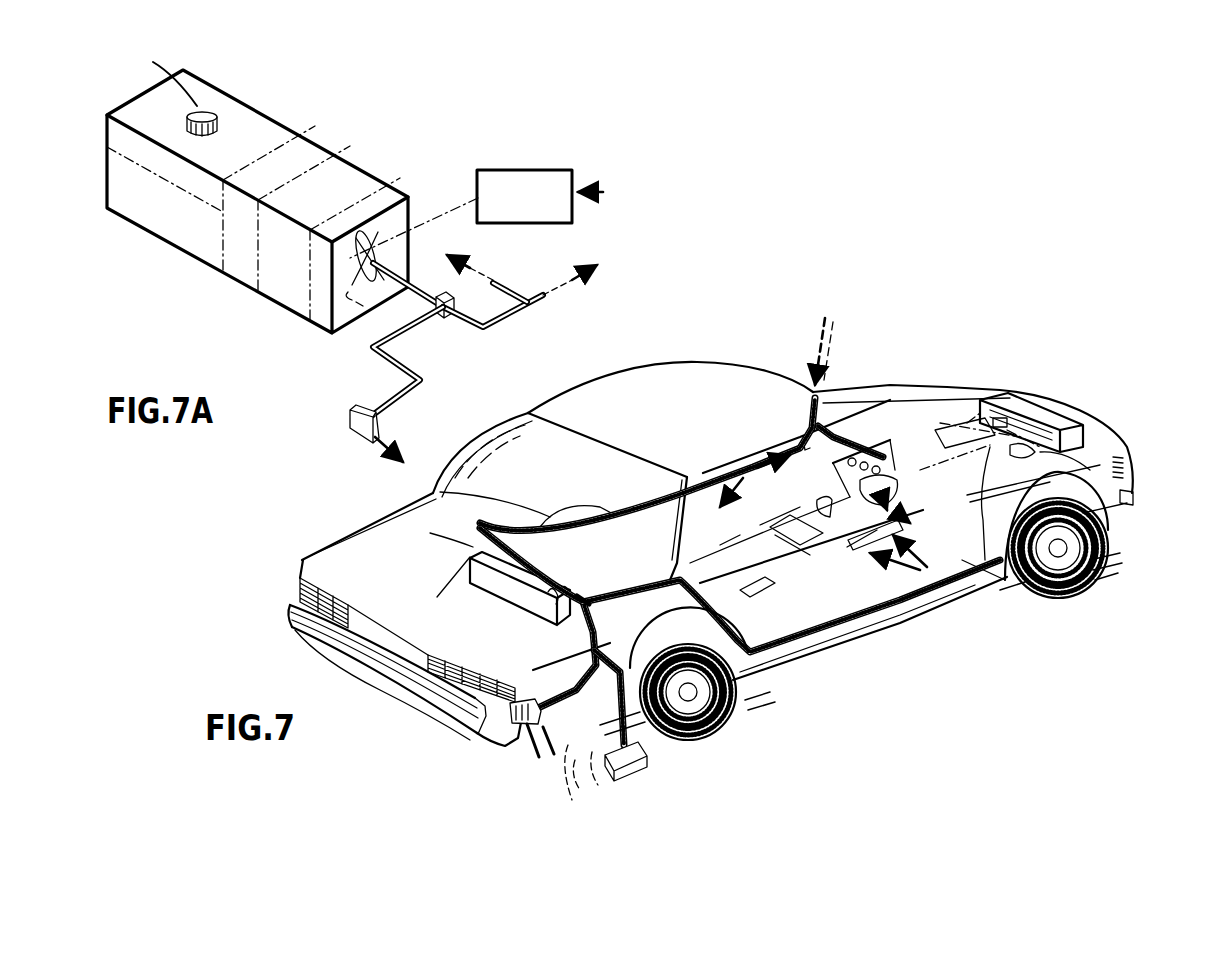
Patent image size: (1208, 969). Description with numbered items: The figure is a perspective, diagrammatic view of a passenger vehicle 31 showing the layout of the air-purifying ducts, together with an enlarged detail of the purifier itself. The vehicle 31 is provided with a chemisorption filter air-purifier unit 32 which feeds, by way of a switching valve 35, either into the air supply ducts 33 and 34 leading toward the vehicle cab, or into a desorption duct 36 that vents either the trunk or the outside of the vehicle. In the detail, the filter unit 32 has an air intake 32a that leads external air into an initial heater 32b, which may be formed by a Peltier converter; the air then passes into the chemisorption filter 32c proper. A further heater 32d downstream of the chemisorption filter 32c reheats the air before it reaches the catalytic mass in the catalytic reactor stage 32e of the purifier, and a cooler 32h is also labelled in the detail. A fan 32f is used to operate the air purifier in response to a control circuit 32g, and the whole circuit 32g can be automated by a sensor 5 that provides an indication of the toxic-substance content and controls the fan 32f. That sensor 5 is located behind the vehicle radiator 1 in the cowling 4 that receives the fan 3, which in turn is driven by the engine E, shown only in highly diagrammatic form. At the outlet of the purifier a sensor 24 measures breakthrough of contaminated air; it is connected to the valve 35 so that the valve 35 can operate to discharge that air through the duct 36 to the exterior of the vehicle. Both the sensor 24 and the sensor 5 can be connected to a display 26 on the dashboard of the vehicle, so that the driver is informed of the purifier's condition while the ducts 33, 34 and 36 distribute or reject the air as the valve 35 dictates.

In FIG. 7A, the chemisorption filter air-purifier unit 32 is at (230, 285).
In FIG. 7, the chemisorption filter air-purifier unit 32 is at (487, 585).
In FIG. 7A, the air intake 32a is at (208, 113).
In FIG. 7A, the initial heater 32b is at (107, 133).
In FIG. 7A, the chemisorption filter 32c is at (135, 210).
In FIG. 7A, the further heater 32d is at (318, 131).
In FIG. 7A, the catalytic reactor stage 32e is at (354, 168).
In FIG. 7A, the fan 32f is at (330, 333).
In FIG. 7, the fan 32f is at (532, 592).
In FIG. 7A, the control circuit 32g is at (546, 170).
In FIG. 7A, the cooler 32h is at (388, 197).
In FIG. 7A, the air supply duct 33 is at (523, 314).
In FIG. 7, the air supply duct 33 is at (625, 590).
In FIG. 7A, the air supply duct 34 is at (518, 291).
In FIG. 7, the air supply duct 34 is at (553, 573).
In FIG. 7A, the switching valve 35 is at (444, 296).
In FIG. 7, the switching valve 35 is at (634, 757).
In FIG. 7A, the desorption duct 36 is at (412, 362).
In FIG. 7, the desorption duct 36 is at (587, 700).
In FIG. 7, the passenger vehicle 31 is at (757, 390).
In FIG. 7, the sensor 24 is at (643, 580).
In FIG. 7, the display 26 is at (855, 554).
In FIG. 7, the engine E is at (957, 423).
In FIG. 7, the sensor 5 is at (1010, 447).
In FIG. 7, the vehicle radiator 1 is at (1050, 413).
In FIG. 7, the fan 3 is at (1017, 442).
In FIG. 7, the cowling 4 is at (1020, 450).